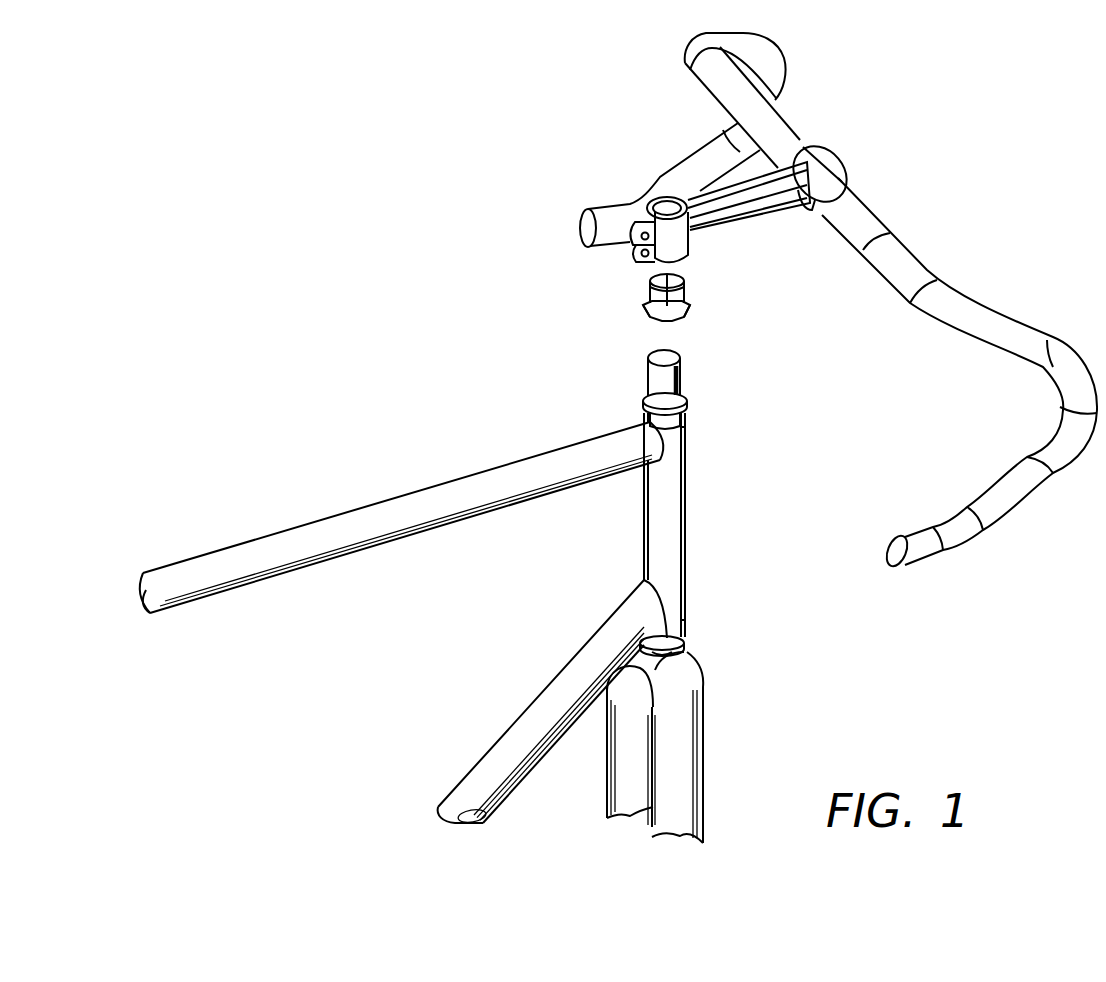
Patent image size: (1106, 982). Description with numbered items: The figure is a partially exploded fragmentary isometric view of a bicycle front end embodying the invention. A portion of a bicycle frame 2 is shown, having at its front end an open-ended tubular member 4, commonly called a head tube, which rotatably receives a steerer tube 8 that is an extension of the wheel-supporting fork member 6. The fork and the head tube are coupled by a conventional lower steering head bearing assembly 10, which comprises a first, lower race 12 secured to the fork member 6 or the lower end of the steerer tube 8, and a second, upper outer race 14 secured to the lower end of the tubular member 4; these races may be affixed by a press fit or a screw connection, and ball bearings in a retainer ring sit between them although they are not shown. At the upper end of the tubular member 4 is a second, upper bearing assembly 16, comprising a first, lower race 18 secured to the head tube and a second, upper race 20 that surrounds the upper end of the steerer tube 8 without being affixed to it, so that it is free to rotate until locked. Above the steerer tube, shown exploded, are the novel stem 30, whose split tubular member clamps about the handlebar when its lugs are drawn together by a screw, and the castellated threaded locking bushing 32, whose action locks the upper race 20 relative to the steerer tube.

The bicycle frame 2 is at (325, 482).
The tubular member 4 is at (650, 522).
The fork member 6 is at (712, 721).
The steerer tube 8 is at (660, 386).
The lower steering head bearing assembly 10 is at (699, 633).
The first (lower) race 12 is at (667, 655).
The second (upper) outer race 14 is at (670, 633).
The upper bearing assembly 16 is at (704, 395).
The first (lower) race 18 is at (687, 434).
The second (upper) race 20 is at (689, 397).
The stem 30 is at (739, 237).
The locking bushing 32 is at (632, 298).